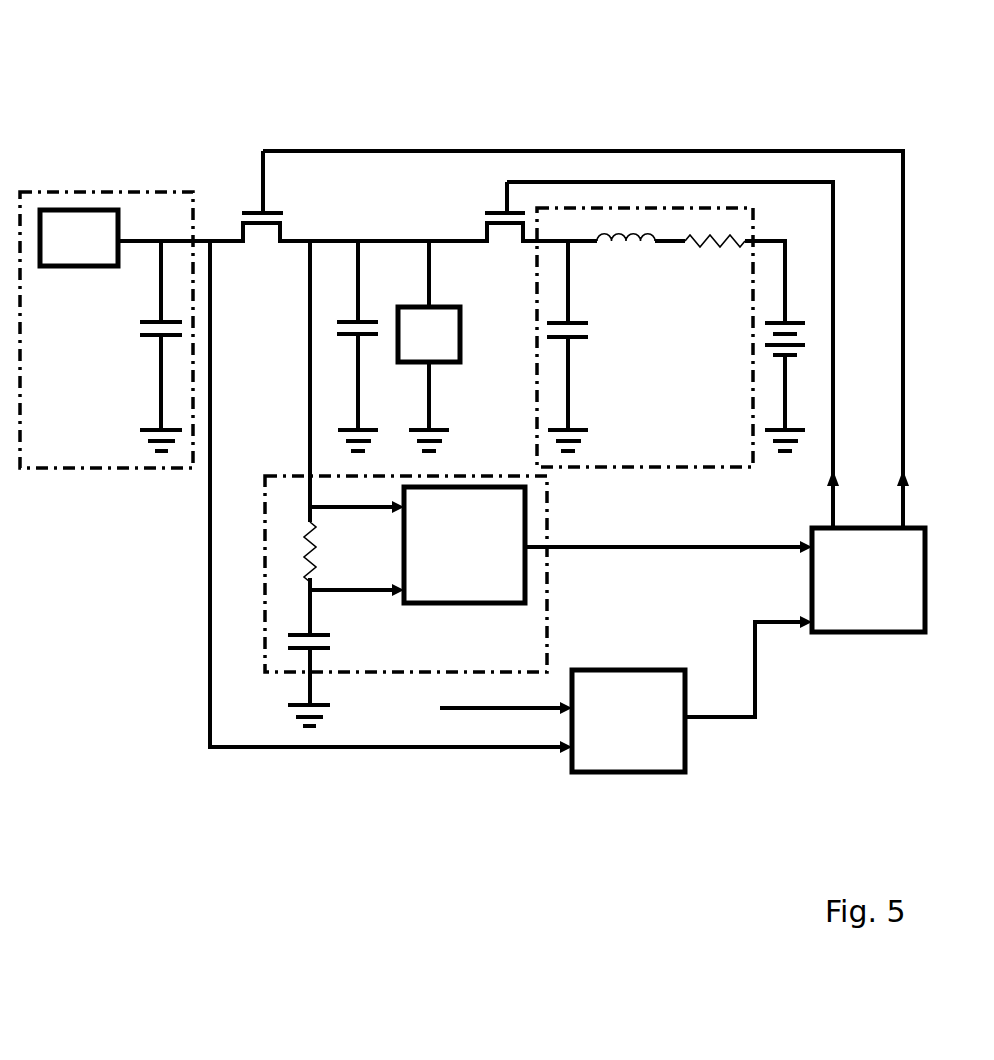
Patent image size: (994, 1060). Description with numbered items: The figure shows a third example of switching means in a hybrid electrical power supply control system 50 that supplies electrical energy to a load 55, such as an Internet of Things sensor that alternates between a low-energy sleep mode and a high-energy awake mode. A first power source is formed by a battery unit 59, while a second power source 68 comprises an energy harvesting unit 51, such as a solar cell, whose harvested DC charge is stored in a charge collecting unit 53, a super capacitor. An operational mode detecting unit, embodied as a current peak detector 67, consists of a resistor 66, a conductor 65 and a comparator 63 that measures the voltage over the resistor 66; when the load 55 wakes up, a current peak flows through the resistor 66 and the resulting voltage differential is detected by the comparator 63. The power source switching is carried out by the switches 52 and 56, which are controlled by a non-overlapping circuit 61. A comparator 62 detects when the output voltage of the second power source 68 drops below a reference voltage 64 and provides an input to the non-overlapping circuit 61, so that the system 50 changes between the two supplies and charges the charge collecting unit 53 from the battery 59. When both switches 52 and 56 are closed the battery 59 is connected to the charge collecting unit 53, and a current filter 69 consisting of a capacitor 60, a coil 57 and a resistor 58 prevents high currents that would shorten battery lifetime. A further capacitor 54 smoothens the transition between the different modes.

The hybrid electrical power supply control system 50 is at (108, 100).
The energy harvesting unit 51 is at (95, 210).
The switch 52 is at (260, 198).
The charge collecting unit 53 is at (158, 345).
The further capacitor 54 is at (356, 320).
The load 55 is at (413, 306).
The switch 56 is at (505, 196).
The coil 57 is at (587, 242).
The resistor 58 is at (753, 237).
The battery unit 59 is at (787, 306).
The capacitor 60 is at (573, 308).
The non-overlapping circuit 61 is at (862, 633).
The comparator 62 is at (688, 740).
The comparator 63 is at (478, 603).
The reference voltage 64 is at (467, 708).
The conductor 65 is at (300, 659).
The resistor 66 is at (305, 588).
The current peak detector 67 is at (263, 537).
The second power source 68 is at (143, 470).
The current filter 69 is at (583, 207).